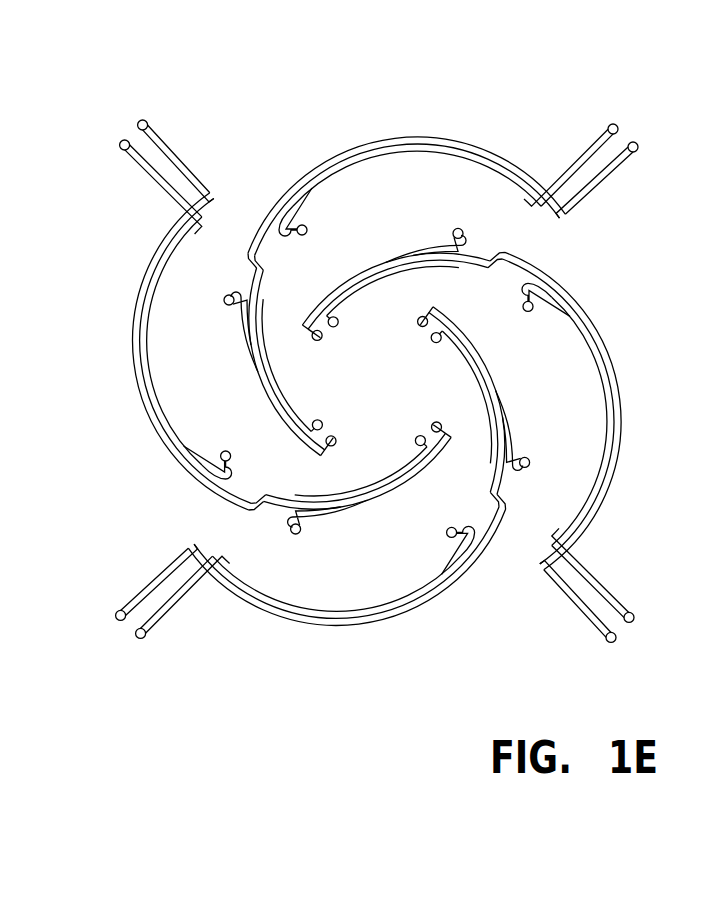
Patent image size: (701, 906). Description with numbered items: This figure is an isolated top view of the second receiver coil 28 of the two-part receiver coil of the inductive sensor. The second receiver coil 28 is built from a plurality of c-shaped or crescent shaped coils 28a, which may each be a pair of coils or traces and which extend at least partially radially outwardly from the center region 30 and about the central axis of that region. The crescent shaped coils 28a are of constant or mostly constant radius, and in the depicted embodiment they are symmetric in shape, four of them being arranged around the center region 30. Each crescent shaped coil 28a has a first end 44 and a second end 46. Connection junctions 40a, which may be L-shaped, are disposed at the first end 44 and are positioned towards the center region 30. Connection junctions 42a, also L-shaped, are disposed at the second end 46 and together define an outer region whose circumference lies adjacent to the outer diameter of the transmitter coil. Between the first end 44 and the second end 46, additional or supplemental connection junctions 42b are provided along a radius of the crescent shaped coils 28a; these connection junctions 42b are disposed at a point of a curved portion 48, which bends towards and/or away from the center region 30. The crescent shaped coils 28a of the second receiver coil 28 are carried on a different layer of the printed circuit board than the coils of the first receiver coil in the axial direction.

The second receiver coil 28 is at (271, 120).
The crescent shaped coils 28a is at (418, 134).
The center region 30 is at (363, 357).
The connection junctions 40a is at (333, 436).
The connection junctions 42a is at (141, 120).
The supplemental connection junctions 42b is at (453, 231).
The first end 44 is at (288, 425).
The second end 46 is at (531, 177).
The curved portion 48 is at (468, 243).